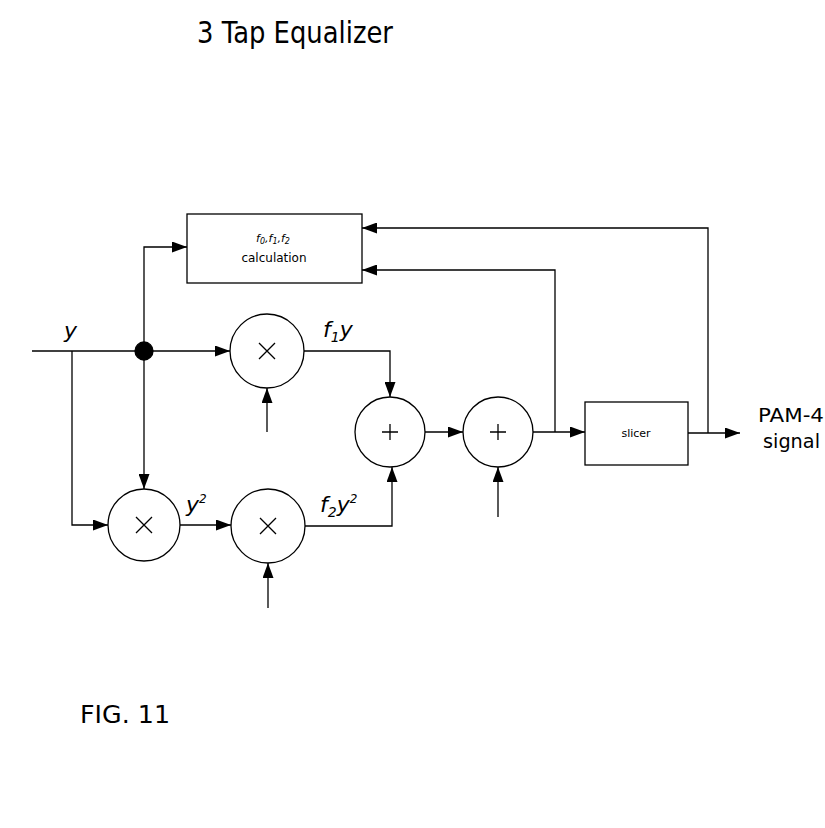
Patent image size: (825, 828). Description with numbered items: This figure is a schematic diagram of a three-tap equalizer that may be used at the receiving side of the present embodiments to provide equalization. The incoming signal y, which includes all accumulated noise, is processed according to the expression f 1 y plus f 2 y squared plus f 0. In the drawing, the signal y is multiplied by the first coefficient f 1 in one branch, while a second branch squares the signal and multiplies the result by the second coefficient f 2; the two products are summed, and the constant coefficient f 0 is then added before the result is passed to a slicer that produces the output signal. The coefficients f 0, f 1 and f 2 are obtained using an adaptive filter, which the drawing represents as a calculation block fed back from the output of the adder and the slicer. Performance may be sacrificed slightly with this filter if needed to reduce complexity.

The f0 tap coefficient adder 0 is at (498, 458).
The f1 tap coefficient multiplier 1 is at (267, 374).
The f2 tap coefficient multiplier 2 is at (268, 548).